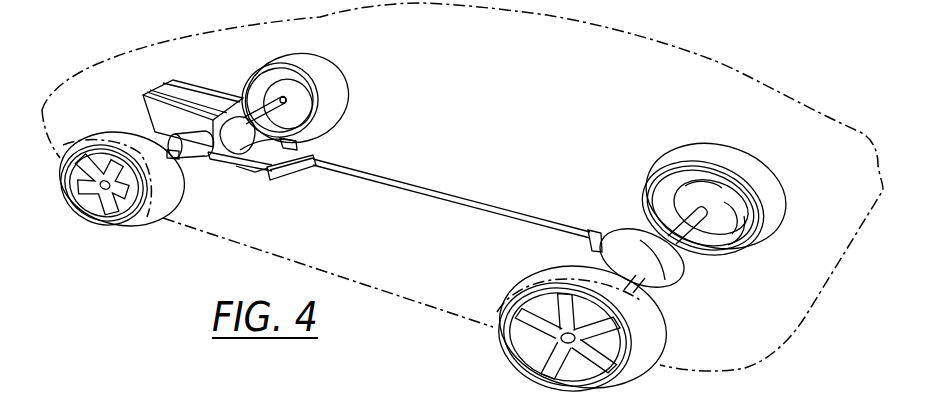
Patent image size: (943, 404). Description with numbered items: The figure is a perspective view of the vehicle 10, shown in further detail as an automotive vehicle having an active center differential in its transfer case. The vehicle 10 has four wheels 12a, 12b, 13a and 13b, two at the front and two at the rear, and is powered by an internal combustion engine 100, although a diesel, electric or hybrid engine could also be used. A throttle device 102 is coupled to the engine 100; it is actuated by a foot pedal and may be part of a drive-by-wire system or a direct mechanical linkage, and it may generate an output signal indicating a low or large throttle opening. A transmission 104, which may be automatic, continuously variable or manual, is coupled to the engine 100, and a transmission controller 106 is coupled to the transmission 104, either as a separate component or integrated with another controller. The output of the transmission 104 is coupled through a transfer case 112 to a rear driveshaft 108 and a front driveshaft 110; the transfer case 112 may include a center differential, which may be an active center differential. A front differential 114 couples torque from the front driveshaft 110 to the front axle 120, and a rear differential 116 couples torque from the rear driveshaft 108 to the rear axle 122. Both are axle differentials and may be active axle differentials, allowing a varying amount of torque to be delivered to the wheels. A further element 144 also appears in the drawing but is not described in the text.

The vehicle 10 is at (714, 61).
The wheel 12a is at (327, 73).
The wheel 12b is at (123, 223).
The wheel 13a is at (730, 153).
The wheel 13b is at (657, 327).
The internal combustion engine 100 is at (180, 84).
The throttle device 102 is at (143, 95).
The transmission 104 is at (238, 86).
The transmission controller 106 is at (338, 134).
The rear driveshaft 108 is at (447, 195).
The front driveshaft 110 is at (255, 172).
The transfer case 112 is at (317, 148).
The front differential 114 is at (248, 173).
The rear differential 116 is at (673, 272).
The front axle 120 is at (177, 159).
The rear axle 122 is at (703, 247).
The controller 144 is at (428, 400).